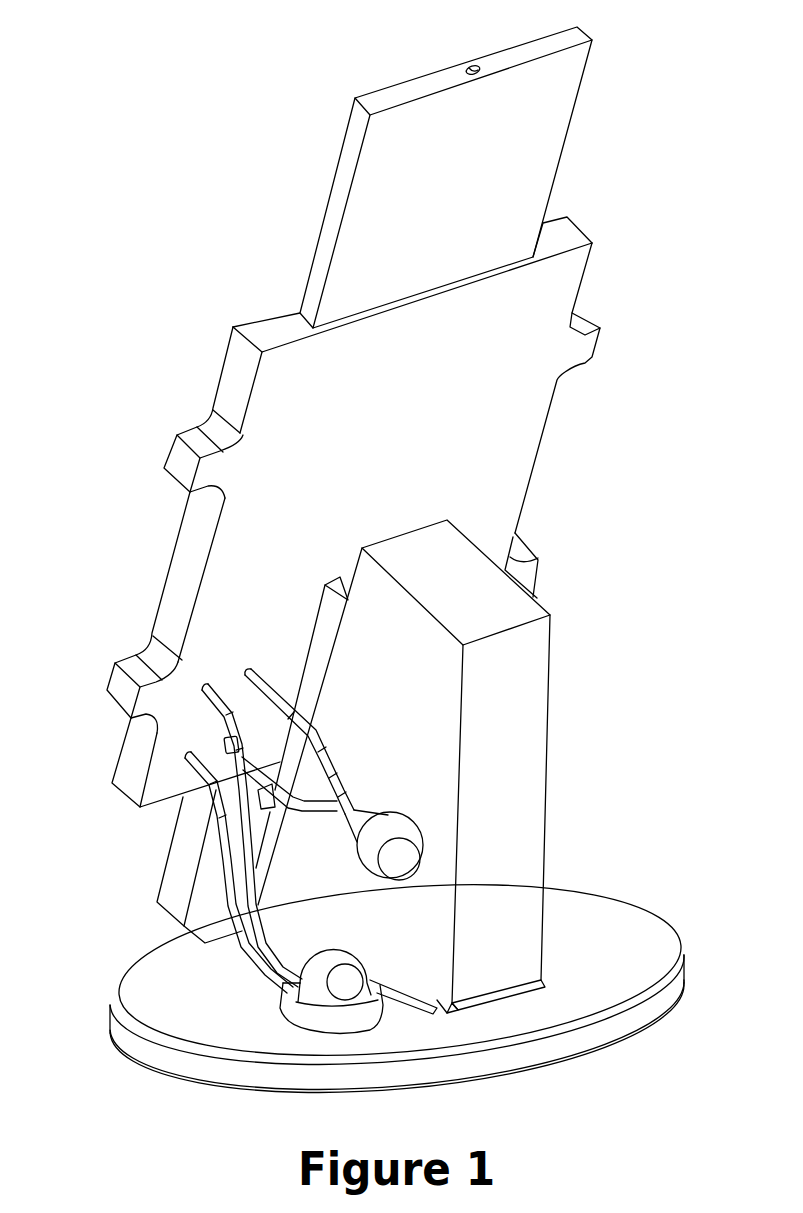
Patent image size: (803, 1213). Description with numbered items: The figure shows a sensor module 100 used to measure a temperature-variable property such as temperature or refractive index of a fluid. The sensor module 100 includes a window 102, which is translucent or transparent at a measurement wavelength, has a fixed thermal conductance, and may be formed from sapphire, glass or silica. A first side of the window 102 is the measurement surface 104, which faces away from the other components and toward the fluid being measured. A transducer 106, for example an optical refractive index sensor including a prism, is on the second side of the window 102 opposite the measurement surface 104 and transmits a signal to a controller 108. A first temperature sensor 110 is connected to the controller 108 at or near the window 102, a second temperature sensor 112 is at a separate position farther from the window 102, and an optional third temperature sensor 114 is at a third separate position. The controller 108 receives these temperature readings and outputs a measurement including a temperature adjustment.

The sensor module 100 is at (188, 142).
The window 102 is at (193, 1003).
The measurement surface 104 is at (607, 1046).
The transducer 106 is at (508, 797).
The controller 108 is at (322, 428).
The first temperature sensor 110 is at (323, 952).
The second temperature sensor 112 is at (407, 855).
The third temperature sensor 114 is at (225, 747).